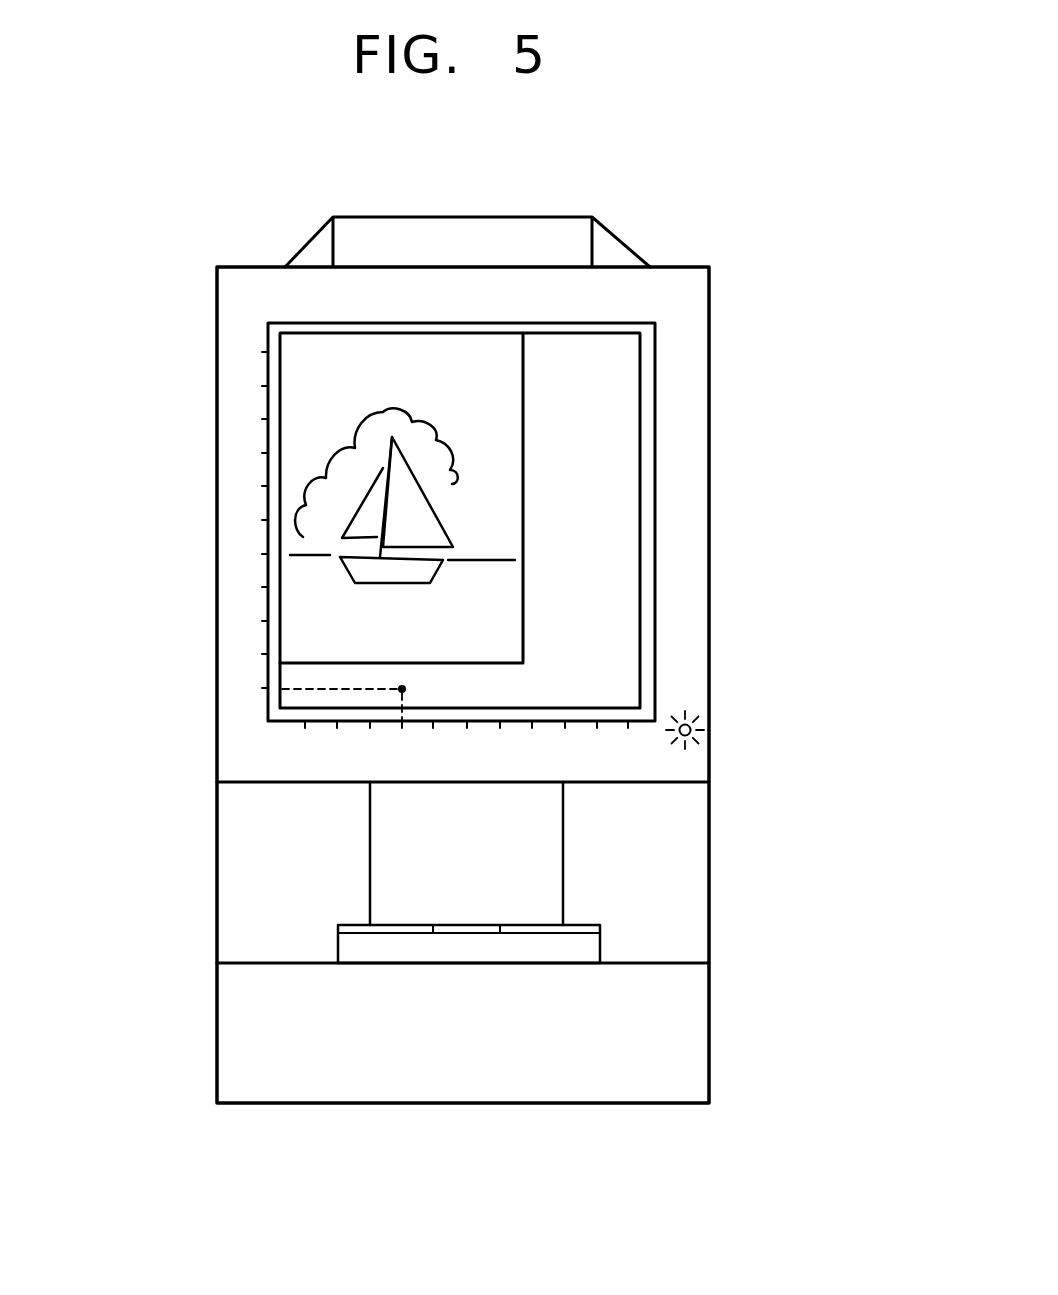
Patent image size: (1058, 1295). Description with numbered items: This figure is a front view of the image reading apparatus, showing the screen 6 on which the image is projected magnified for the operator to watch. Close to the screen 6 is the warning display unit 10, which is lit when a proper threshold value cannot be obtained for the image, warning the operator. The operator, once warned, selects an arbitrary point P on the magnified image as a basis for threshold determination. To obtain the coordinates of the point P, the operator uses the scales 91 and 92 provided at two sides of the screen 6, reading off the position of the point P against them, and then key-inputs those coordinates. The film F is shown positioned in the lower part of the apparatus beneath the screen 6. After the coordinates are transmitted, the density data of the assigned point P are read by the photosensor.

The screen 6 is at (630, 432).
The scale 91 is at (263, 615).
The scale 92 is at (598, 728).
The warning display unit 10 is at (688, 721).
The point P is at (402, 689).
The film F is at (485, 927).